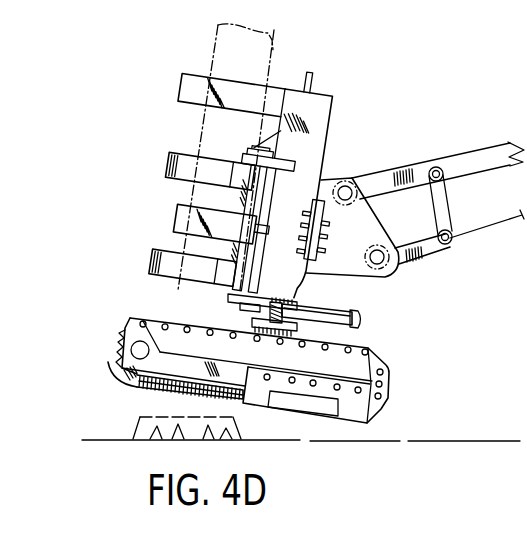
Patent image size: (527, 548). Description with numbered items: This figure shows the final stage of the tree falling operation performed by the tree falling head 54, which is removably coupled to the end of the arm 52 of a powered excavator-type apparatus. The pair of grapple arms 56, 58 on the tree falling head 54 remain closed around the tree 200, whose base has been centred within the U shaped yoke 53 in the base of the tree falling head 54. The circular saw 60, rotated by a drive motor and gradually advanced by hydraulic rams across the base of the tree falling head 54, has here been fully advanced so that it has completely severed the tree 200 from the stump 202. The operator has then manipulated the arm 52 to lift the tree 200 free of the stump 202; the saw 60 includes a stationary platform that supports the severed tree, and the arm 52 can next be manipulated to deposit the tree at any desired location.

The tree 200 is at (274, 51).
The arm 52 is at (463, 157).
The U shaped yoke 53 is at (360, 368).
The tree falling head 54 is at (318, 146).
The grapple arm 56 is at (178, 94).
The grapple arm 58 is at (176, 214).
The circular saw 60 is at (232, 396).
The stump 202 is at (140, 428).